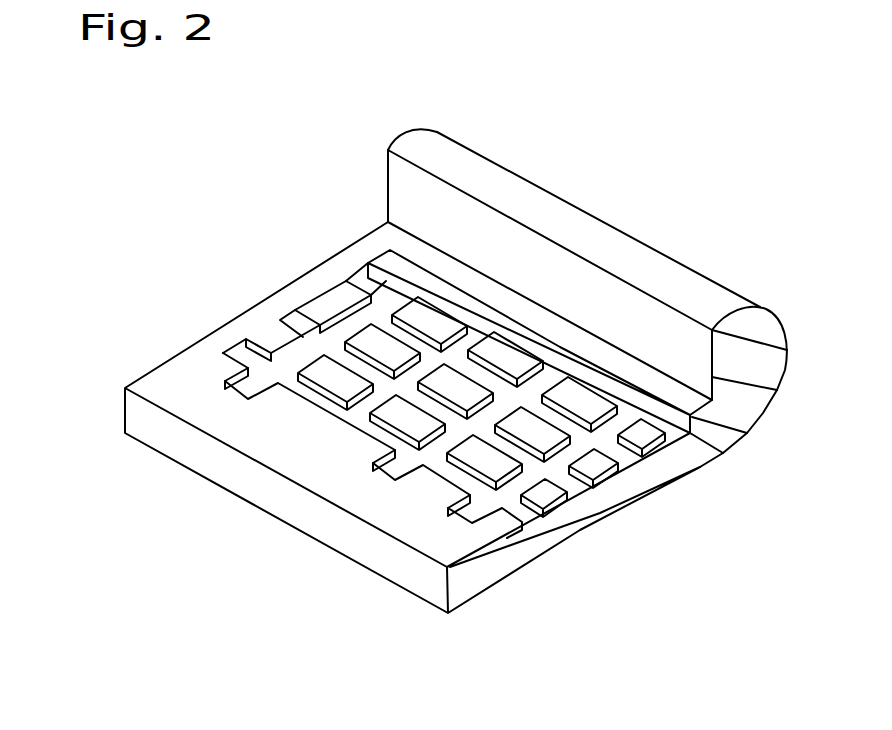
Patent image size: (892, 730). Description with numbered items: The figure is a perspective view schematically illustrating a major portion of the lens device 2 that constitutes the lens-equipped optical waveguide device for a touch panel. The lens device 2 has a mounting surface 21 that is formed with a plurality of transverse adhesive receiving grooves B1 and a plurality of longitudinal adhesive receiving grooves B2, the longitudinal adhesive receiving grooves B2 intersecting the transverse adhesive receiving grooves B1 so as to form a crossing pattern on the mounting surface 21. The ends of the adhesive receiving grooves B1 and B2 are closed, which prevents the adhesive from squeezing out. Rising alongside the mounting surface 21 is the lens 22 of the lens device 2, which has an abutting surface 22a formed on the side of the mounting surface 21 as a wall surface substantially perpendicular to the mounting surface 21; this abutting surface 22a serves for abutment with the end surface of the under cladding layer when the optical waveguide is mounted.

The lens device 2 is at (509, 139).
The mounting surface 21 is at (162, 375).
The lens 22 is at (625, 245).
The abutting surface 22a is at (403, 187).
The transverse adhesive receiving grooves B1 is at (298, 357).
The longitudinal adhesive receiving grooves B2 is at (407, 335).